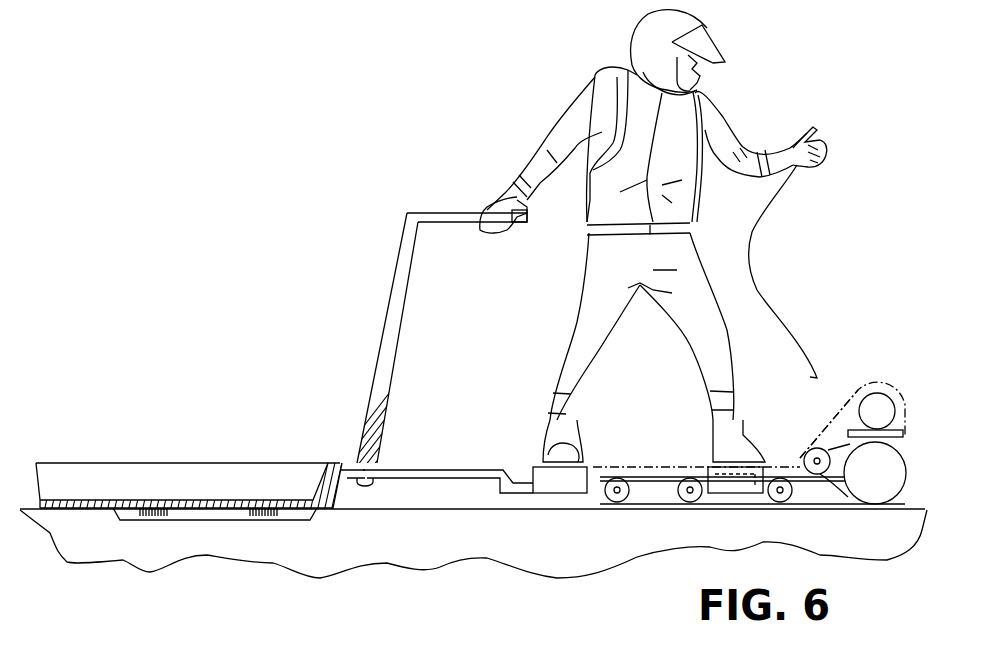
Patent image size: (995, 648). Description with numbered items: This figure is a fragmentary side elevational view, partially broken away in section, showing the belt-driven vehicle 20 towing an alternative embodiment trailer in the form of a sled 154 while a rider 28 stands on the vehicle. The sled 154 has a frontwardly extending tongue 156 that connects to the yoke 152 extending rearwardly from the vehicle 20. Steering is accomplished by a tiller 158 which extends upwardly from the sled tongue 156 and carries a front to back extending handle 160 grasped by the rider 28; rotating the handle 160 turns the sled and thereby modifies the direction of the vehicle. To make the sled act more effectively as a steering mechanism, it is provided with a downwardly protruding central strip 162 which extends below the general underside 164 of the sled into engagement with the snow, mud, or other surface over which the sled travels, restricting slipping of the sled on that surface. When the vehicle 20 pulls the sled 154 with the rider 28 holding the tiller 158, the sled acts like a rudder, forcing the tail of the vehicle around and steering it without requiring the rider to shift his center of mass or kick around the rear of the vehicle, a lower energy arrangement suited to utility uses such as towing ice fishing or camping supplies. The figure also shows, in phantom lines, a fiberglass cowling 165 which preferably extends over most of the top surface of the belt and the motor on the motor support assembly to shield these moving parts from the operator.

The rider 28 is at (760, 102).
The vehicle 20 is at (860, 364).
The fiberglass cowling 165 is at (793, 458).
The sled 154 is at (207, 403).
The tongue 156 is at (337, 470).
The tiller 158 is at (384, 333).
The handle 160 is at (453, 222).
The yoke 152 is at (457, 480).
The central strip 162 is at (218, 517).
The general underside 164 is at (88, 510).